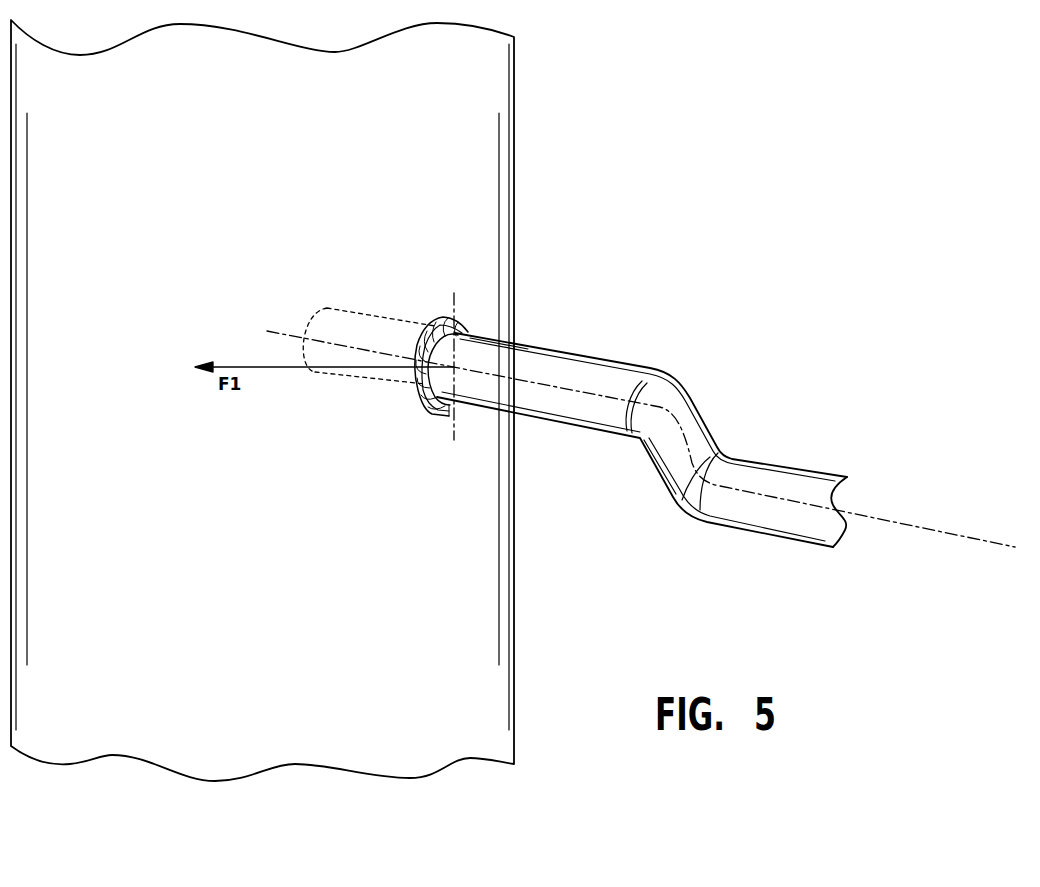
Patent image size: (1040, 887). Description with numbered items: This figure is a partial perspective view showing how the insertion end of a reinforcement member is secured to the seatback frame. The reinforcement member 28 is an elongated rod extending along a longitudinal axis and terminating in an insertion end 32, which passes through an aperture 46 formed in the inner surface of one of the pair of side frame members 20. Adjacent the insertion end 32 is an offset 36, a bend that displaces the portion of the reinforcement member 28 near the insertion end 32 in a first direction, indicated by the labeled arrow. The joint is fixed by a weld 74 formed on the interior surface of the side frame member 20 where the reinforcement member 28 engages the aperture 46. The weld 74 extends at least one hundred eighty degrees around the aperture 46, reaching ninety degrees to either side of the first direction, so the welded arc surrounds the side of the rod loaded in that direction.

The side frame member 20 is at (514, 102).
The reinforcement member 28 is at (641, 439).
The insertion end 32 is at (378, 316).
The offset 36 is at (693, 437).
The aperture 46 is at (470, 336).
The weld 74 is at (417, 383).